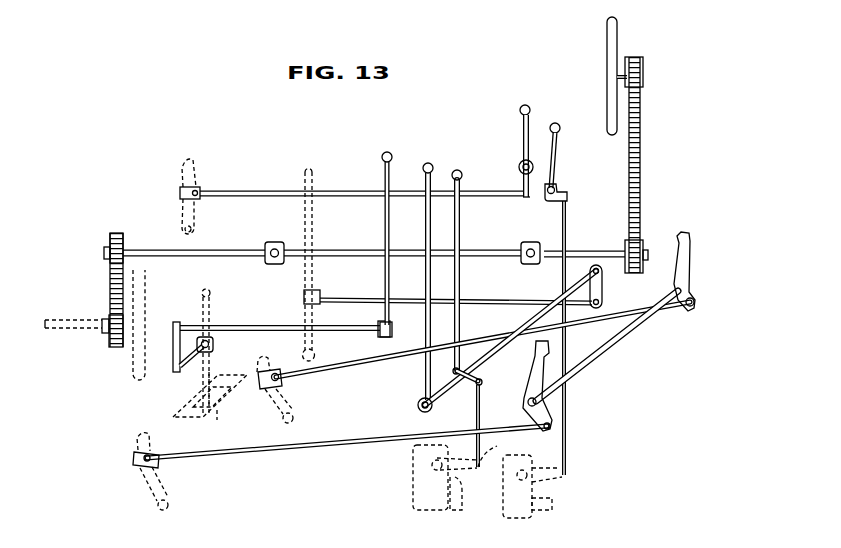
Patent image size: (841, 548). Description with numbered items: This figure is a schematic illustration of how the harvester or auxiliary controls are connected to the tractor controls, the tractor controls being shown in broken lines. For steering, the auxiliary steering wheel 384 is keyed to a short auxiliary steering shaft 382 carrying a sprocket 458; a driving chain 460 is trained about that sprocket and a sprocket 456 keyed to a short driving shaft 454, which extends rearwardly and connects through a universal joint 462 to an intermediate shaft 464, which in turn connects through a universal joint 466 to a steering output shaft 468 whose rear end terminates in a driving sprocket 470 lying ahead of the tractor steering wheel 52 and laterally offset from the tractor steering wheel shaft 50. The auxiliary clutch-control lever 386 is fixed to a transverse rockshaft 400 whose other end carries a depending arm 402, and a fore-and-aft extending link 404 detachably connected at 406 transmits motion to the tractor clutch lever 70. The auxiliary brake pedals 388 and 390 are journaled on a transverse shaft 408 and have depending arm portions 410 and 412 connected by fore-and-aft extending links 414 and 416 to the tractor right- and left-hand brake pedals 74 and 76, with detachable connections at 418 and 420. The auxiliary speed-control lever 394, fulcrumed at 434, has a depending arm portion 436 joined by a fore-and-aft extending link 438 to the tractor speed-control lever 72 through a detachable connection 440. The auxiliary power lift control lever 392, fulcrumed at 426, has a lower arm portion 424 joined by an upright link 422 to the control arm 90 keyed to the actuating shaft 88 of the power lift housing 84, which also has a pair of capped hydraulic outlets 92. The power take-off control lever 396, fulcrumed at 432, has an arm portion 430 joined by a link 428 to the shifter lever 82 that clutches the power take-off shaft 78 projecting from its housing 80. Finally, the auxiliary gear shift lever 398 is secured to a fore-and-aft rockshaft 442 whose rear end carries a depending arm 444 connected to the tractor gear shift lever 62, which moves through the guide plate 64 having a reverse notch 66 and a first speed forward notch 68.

The auxiliary steering wheel 384 is at (617, 23).
The auxiliary steering shaft 382 is at (619, 70).
The sprocket 458 is at (643, 72).
The driving chain 460 is at (642, 144).
The sprocket 456 is at (642, 241).
The short driving shaft 454 is at (587, 251).
The auxiliary brake pedal 390 is at (688, 238).
The depending arm portion 412 is at (692, 295).
The transverse shaft 408 is at (625, 325).
The depending arm 402 is at (600, 290).
The fore-and-aft extending link 404 is at (490, 297).
The detachable connection 406 is at (318, 297).
The intermediate shaft 464 is at (347, 250).
The universal joint 466 is at (276, 242).
The universal joint 462 is at (526, 242).
The steering output shaft 468 is at (220, 250).
The driving sprocket 470 is at (110, 248).
The steering wheel shaft 50 is at (78, 332).
The steering wheel 52 is at (132, 377).
The speed-control lever 72 is at (187, 163).
The detachable connection 440 is at (198, 190).
The fore-and-aft extending link 438 is at (268, 191).
The auxiliary speed-control lever 394 is at (523, 108).
The fulcrum 434 is at (522, 162).
The depending arm portion 436 is at (522, 183).
The power take-off control lever 396 is at (555, 123).
The fulcrum 432 is at (558, 187).
The arm portion 430 is at (565, 188).
The link 428 is at (565, 440).
The auxiliary brake pedal 388 is at (542, 362).
The depending arm portion 410 is at (547, 412).
The fore-and-aft extending link 414 is at (323, 445).
The detachable connection 418 is at (152, 465).
The left-hand brake pedal 76 is at (135, 445).
The right-hand brake pedal 74 is at (263, 402).
The detachable connection 420 is at (279, 378).
The fore-and-aft extending link 416 is at (365, 360).
The auxiliary gear shift lever 398 is at (385, 152).
The auxiliary clutch-control lever 386 is at (427, 163).
The auxiliary power lift control lever 392 is at (457, 170).
The transverse rockshaft 400 is at (416, 415).
The fulcrum 426 is at (450, 382).
The lower arm portion 424 is at (485, 372).
The upright link 422 is at (481, 408).
The control arm 90 is at (493, 456).
The actuating shaft 88 is at (413, 463).
The power lift housing 84 is at (420, 500).
The capped hydraulic outlets 92 is at (460, 507).
The housing 80 is at (517, 507).
The shifter lever 82 is at (568, 473).
The power take-off shaft 78 is at (553, 505).
The rockshaft 442 is at (267, 317).
The depending arm 444 is at (173, 365).
The tractor gear shift lever 62 is at (213, 288).
The first speed forward notch 68 is at (230, 374).
The reverse notch 66 is at (182, 407).
The guide plate 64 is at (217, 412).
The clutch lever 70 is at (308, 251).